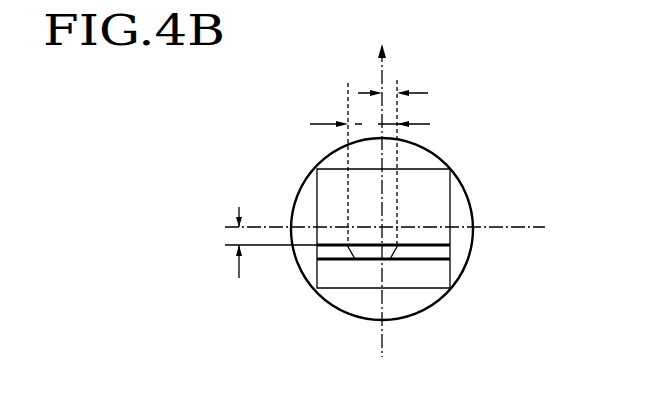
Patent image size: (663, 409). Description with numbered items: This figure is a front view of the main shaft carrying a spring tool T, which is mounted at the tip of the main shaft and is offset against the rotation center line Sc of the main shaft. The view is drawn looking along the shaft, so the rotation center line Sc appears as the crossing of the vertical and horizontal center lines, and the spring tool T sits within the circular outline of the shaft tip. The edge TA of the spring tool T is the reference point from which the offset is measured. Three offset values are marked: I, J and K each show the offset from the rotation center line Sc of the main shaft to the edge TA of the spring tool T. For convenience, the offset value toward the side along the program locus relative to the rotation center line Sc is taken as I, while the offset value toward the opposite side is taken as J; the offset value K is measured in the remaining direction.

The spring tool T is at (352, 225).
The edge of the spring tool TA is at (365, 246).
The offset value K is at (228, 245).
The offset value I is at (370, 162).
The offset value J is at (399, 95).
The rotation center line Sc is at (500, 226).